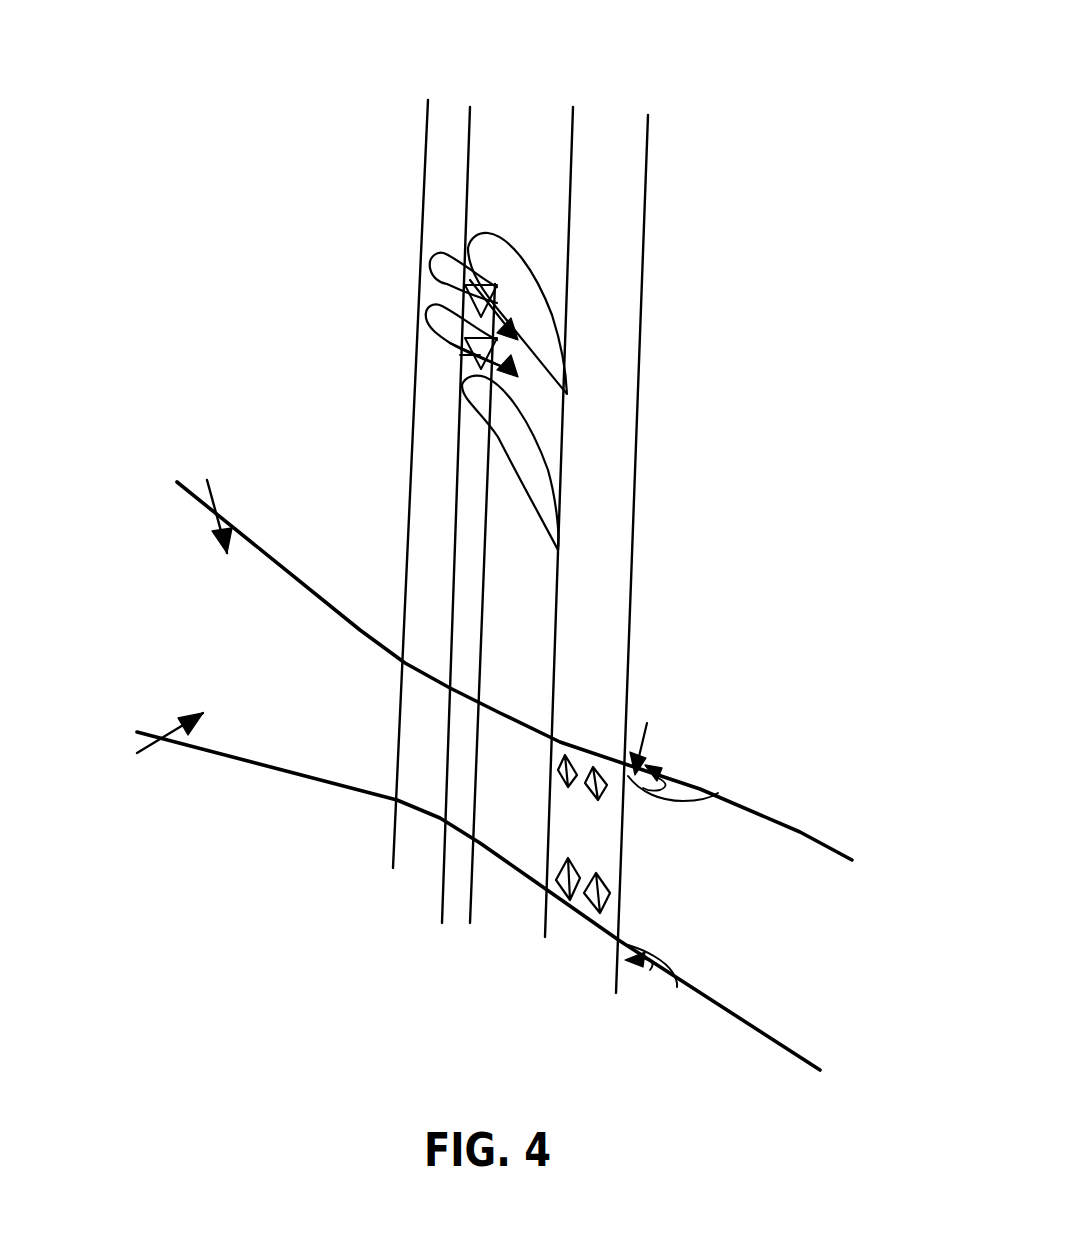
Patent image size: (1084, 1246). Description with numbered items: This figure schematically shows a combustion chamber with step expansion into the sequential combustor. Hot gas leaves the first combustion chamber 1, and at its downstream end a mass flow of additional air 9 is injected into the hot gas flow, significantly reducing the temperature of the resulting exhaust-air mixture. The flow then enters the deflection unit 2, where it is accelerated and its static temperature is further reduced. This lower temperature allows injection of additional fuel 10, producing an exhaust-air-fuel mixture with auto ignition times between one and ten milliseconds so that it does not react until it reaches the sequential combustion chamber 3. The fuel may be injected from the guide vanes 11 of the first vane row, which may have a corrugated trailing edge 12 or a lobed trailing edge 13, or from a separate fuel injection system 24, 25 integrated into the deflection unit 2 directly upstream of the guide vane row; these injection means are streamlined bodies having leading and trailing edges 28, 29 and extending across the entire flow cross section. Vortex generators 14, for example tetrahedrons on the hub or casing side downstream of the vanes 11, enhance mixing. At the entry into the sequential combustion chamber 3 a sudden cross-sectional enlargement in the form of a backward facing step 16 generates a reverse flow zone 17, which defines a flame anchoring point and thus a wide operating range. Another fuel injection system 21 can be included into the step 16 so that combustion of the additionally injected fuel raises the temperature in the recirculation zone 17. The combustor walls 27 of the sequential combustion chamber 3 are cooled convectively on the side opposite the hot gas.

The first combustion chamber 1 is at (249, 676).
The deflection unit 2 is at (523, 813).
The sequential combustion chamber 3 is at (743, 921).
The additional air 9 is at (215, 495).
The additional fuel 10 is at (510, 366).
The guide vane 11 is at (490, 233).
The corrugated trailing edge 12 is at (575, 117).
The lobed trailing edge 13 is at (559, 522).
The vortex generator 14 is at (600, 790).
The backward facing step 16 is at (650, 130).
The reverse flow zone 17 is at (652, 761).
The fuel injection system 21 is at (647, 727).
The fuel injection system 24 is at (426, 311).
The fuel injection system 25 is at (473, 838).
The combustor wall 27 is at (802, 832).
The leading edge 28 is at (427, 130).
The trailing edge 29 is at (470, 117).